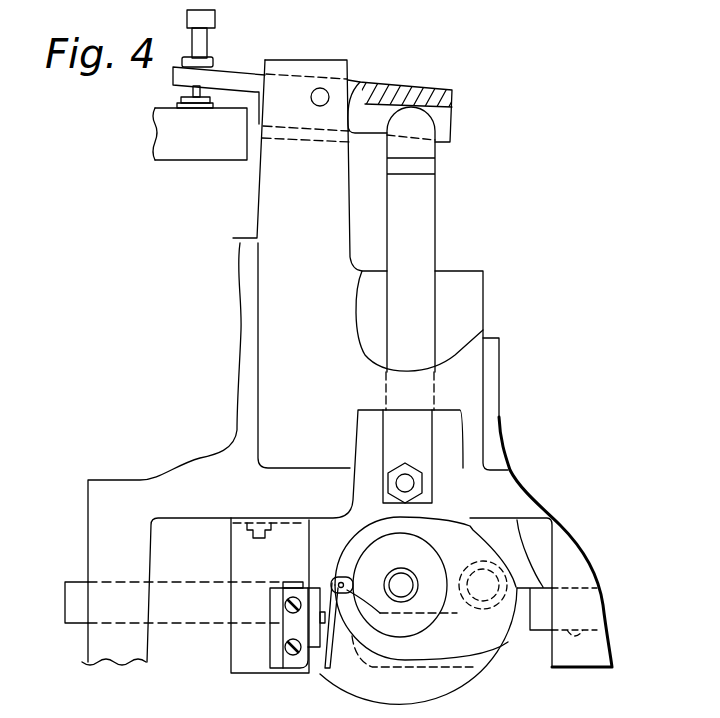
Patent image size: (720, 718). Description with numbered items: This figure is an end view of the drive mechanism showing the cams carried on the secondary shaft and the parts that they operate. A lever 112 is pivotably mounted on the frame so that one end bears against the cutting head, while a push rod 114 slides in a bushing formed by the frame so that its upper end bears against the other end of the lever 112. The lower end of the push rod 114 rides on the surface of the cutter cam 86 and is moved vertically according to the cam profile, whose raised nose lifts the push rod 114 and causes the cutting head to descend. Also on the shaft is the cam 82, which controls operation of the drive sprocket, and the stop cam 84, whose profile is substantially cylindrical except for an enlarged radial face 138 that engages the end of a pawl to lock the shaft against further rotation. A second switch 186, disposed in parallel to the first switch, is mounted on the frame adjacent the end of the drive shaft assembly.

The lever 112 is at (413, 96).
The push rod 114 is at (425, 215).
The cutter cam 86 is at (450, 528).
The cam 82 is at (440, 558).
The enlarged radial face 138 is at (540, 597).
The stop cam 84 is at (442, 697).
The second switch 186 is at (312, 645).